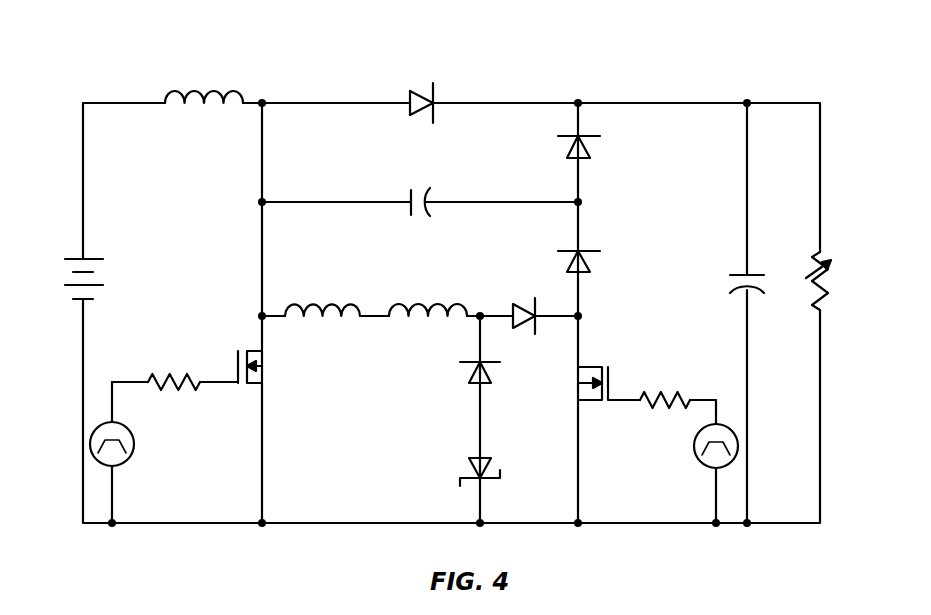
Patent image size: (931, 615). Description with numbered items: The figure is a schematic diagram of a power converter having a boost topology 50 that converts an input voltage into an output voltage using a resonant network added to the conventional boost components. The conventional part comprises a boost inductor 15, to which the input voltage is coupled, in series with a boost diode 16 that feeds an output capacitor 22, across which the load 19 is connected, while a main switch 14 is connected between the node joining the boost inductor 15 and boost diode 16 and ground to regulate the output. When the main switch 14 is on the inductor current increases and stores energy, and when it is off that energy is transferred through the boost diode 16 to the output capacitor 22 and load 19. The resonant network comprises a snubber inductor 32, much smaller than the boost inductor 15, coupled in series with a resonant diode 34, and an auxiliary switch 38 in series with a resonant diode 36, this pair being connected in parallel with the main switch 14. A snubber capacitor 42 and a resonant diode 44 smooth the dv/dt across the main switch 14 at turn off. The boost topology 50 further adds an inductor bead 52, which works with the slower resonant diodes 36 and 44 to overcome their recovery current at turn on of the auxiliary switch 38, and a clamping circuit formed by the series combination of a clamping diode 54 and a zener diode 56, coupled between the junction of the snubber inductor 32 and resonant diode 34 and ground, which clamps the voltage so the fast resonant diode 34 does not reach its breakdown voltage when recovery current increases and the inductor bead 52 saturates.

The main switch 14 is at (266, 370).
The boost inductor 15 is at (197, 89).
The boost diode 16 is at (421, 88).
The load 19 is at (808, 276).
The output capacitor 22 is at (740, 268).
The snubber inductor 32 is at (435, 302).
The resonant diode 34 is at (523, 302).
The resonant diode 36 is at (588, 264).
The auxiliary switch 38 is at (572, 386).
The snubber capacitor 42 is at (406, 194).
The resonant diode 44 is at (588, 148).
The boost topology 50 is at (744, 76).
The inductor bead 52 is at (330, 303).
The clamping diode 54 is at (466, 376).
The zener diode 56 is at (468, 466).